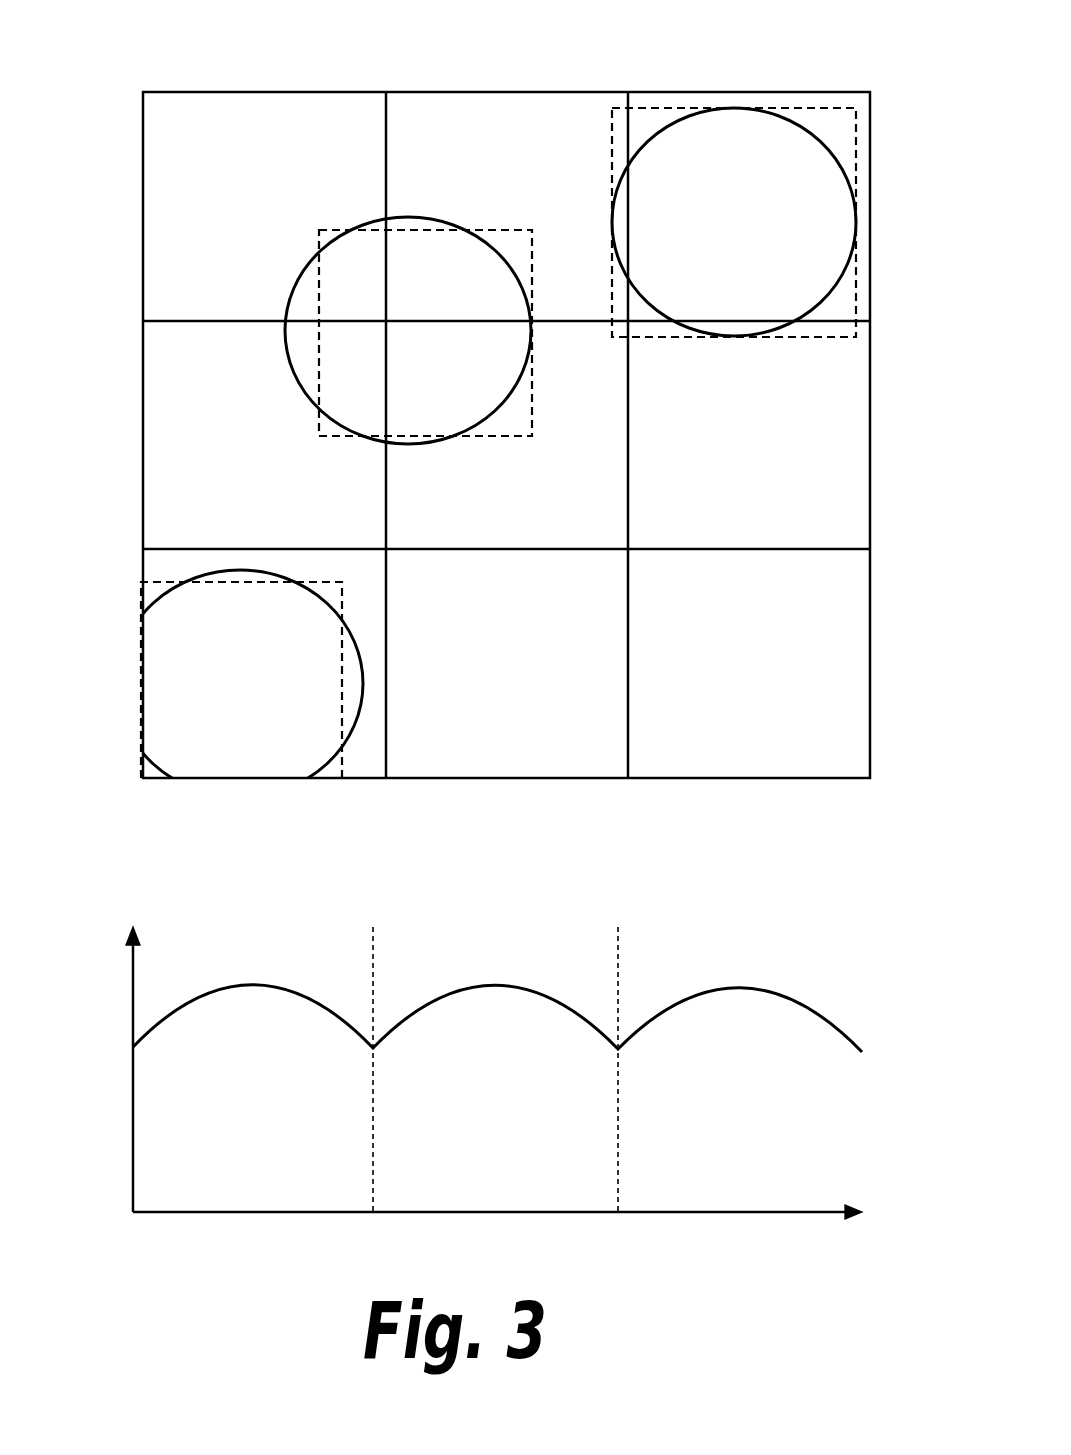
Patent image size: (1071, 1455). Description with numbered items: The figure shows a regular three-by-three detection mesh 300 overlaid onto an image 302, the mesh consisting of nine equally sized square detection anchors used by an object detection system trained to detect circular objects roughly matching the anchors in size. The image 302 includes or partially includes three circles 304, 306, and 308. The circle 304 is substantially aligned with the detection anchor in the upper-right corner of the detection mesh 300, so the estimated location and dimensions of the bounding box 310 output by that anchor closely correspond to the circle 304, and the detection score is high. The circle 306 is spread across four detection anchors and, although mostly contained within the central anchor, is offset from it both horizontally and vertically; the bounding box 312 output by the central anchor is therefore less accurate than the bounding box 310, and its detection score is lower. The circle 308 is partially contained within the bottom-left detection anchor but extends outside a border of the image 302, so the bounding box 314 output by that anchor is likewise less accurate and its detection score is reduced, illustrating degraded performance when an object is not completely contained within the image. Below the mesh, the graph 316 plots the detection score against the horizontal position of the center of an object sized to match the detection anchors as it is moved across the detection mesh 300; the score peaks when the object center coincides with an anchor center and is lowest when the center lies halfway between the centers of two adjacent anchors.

The detection mesh 300 is at (710, 92).
The image 302 is at (518, 64).
The circle 304 is at (790, 322).
The circle 306 is at (378, 217).
The circle 308 is at (363, 684).
The bounding box 310 is at (645, 338).
The bounding box 312 is at (478, 437).
The bounding box 314 is at (343, 604).
The graph 316 is at (502, 920).